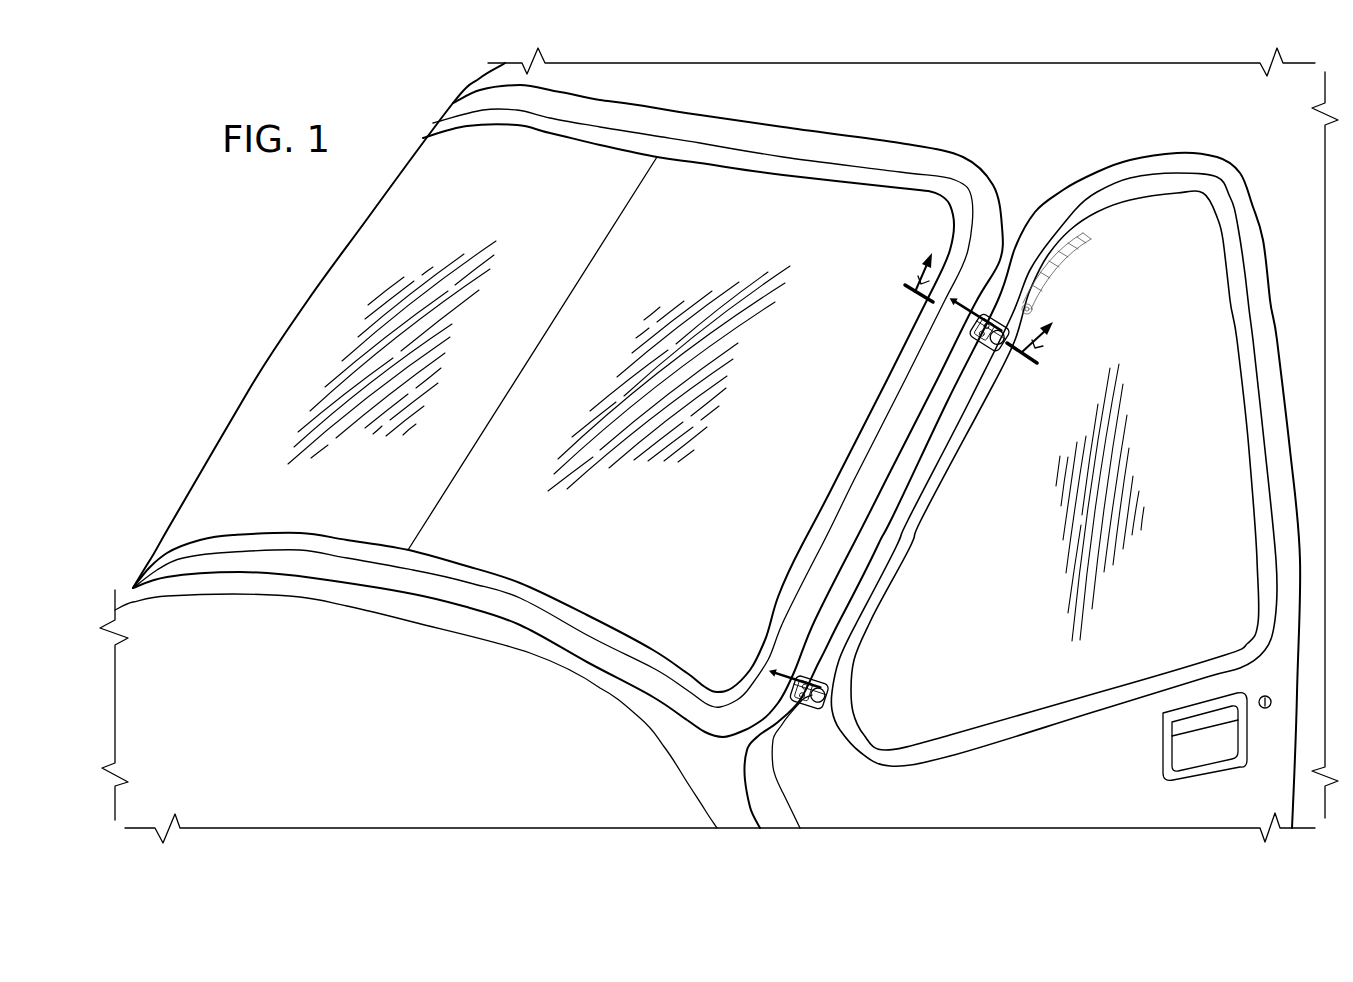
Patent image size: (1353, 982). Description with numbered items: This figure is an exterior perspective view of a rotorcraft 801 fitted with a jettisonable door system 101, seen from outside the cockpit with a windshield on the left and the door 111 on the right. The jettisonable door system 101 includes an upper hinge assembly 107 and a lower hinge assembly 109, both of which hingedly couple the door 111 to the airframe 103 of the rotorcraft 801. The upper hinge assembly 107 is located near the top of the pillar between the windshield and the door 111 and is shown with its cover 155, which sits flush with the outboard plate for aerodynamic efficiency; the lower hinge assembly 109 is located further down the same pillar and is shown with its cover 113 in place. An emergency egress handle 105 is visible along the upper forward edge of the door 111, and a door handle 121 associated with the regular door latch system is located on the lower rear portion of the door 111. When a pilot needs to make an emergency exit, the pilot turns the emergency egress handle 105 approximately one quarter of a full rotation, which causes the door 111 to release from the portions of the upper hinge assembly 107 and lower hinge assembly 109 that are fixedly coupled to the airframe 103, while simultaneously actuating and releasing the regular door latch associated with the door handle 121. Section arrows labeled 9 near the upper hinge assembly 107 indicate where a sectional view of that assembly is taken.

The rotorcraft 801 is at (232, 332).
The jettisonable door system 101 is at (833, 812).
The airframe 103 is at (141, 611).
The emergency egress handle 105 is at (1077, 247).
The upper hinge assembly 107 is at (917, 317).
The lower hinge assembly 109 is at (758, 665).
The door 111 is at (1092, 810).
The cover 113 is at (827, 705).
The door handle 121 is at (1187, 730).
The cover 155 is at (993, 347).
The section line 9- 9 is at (987, 294).